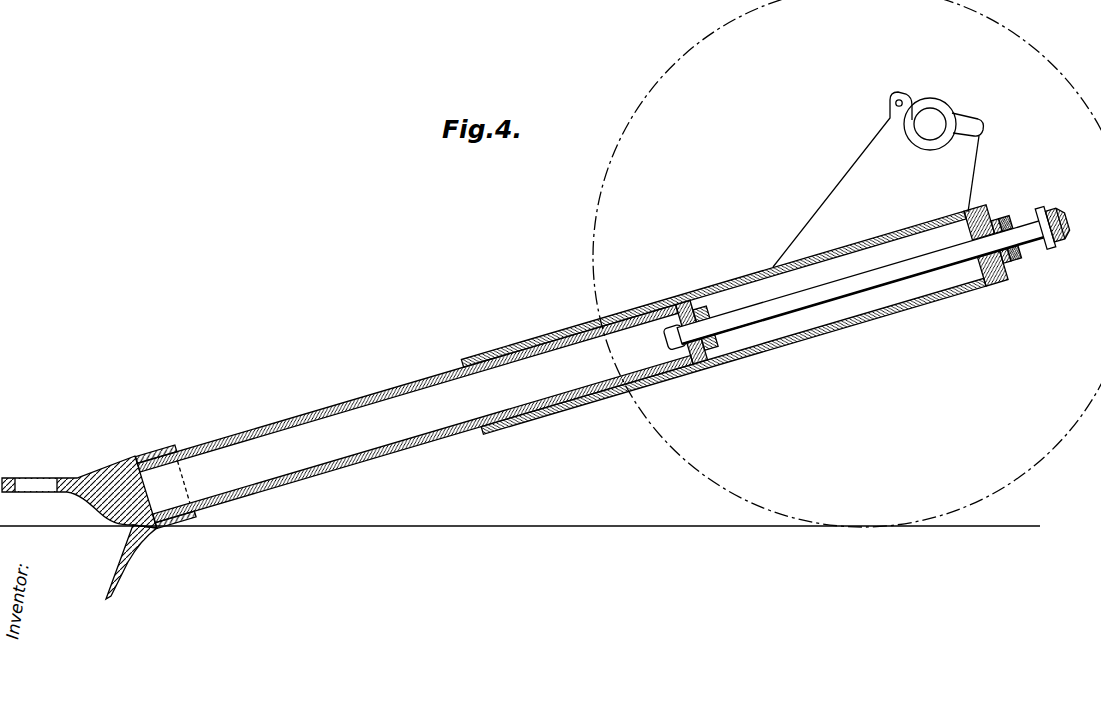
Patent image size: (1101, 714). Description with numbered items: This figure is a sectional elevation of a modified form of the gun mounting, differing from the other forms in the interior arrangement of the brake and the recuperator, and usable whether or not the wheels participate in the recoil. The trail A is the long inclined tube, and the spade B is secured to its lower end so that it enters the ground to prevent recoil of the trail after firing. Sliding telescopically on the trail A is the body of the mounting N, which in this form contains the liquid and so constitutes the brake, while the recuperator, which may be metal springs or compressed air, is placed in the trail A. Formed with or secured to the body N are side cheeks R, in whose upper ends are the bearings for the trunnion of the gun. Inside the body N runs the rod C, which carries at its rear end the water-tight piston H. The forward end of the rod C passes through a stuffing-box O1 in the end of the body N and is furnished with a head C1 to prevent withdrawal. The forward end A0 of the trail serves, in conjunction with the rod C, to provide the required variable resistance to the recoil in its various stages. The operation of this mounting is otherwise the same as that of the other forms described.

The trail A is at (413, 406).
The spade B is at (131, 562).
The water-tight piston H is at (678, 320).
The body of the mounting N is at (715, 306).
The rod C is at (860, 277).
The forward end of the trail A0 is at (705, 338).
The side cheeks R is at (878, 179).
The stuffing-box O1 is at (1013, 253).
The head C1 is at (1066, 233).